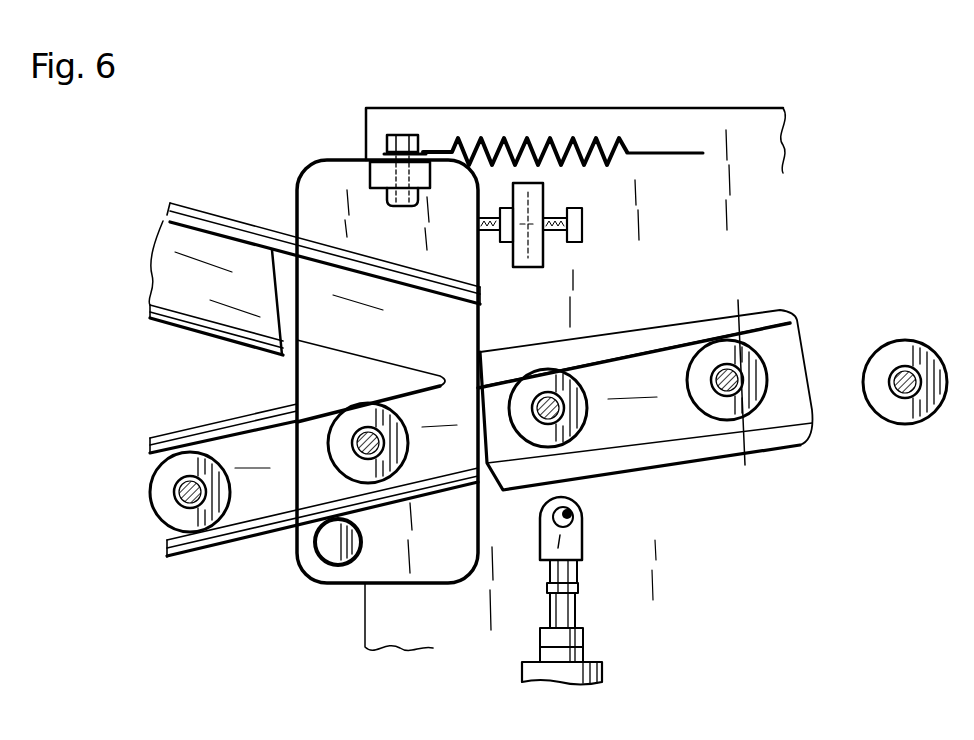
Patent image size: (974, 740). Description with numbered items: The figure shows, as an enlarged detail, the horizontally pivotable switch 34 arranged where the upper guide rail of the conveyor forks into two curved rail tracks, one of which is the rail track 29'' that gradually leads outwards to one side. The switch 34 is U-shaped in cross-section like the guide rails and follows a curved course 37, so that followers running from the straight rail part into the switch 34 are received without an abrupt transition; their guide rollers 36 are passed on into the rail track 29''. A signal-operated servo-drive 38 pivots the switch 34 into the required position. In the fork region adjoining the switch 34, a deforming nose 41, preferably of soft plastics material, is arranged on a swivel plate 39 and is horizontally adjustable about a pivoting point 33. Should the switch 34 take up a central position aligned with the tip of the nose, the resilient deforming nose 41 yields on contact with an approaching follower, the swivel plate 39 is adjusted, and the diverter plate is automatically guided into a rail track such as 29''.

The rail track 29'' is at (271, 380).
The pivoting point 33 is at (332, 550).
The switch 34 is at (672, 367).
The guide rollers 36 is at (583, 430).
The curved course 37 is at (627, 357).
The servo-drive 38 is at (583, 653).
The swivel plate 39 is at (330, 188).
The deforming nose 41 is at (398, 375).